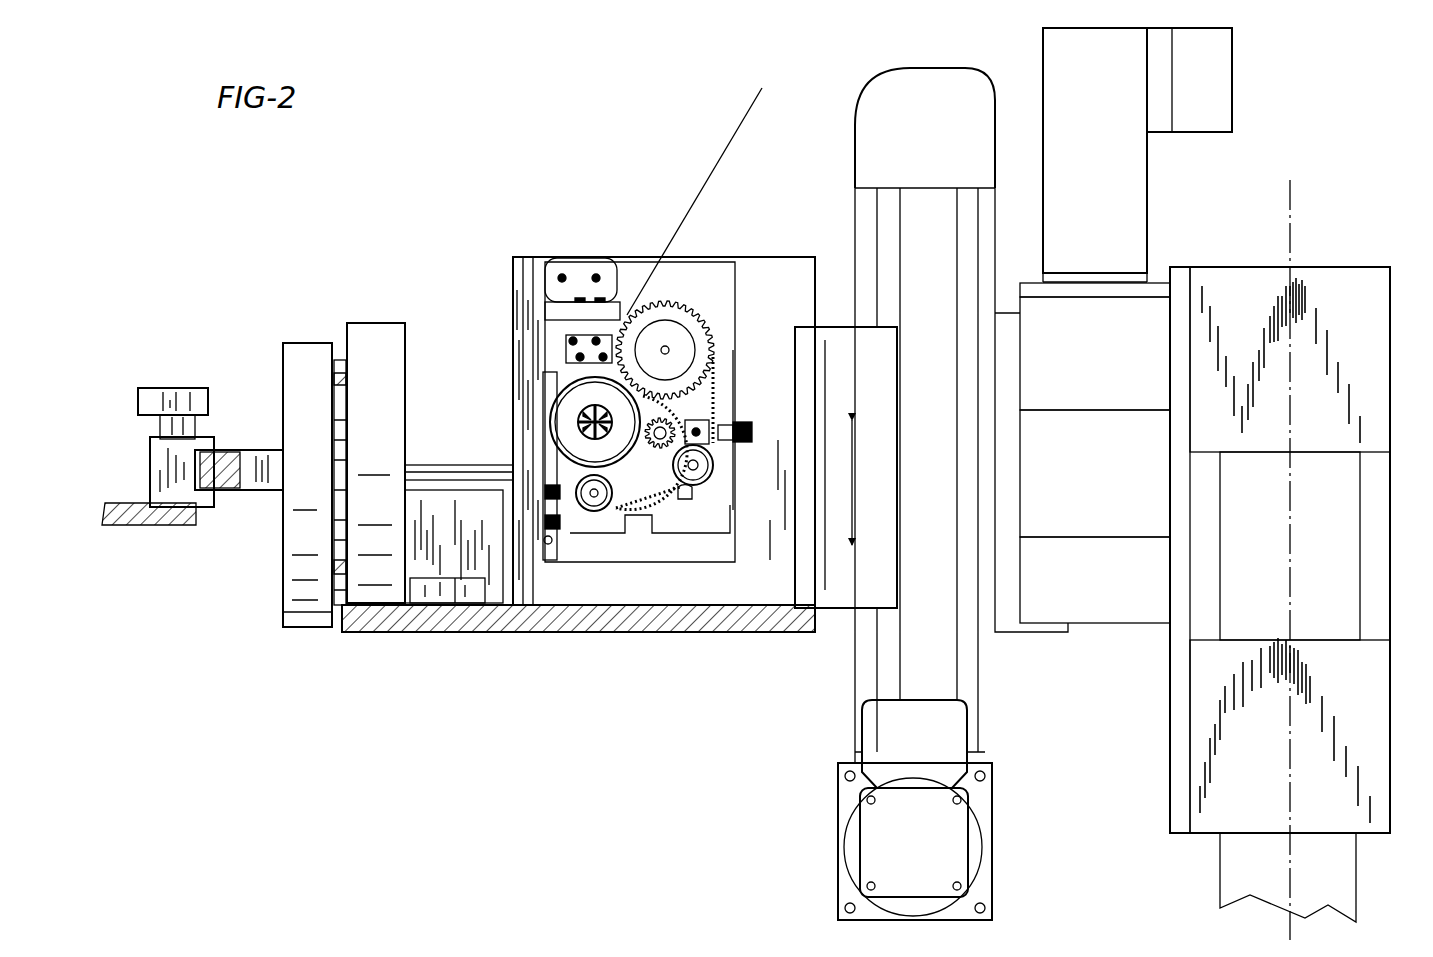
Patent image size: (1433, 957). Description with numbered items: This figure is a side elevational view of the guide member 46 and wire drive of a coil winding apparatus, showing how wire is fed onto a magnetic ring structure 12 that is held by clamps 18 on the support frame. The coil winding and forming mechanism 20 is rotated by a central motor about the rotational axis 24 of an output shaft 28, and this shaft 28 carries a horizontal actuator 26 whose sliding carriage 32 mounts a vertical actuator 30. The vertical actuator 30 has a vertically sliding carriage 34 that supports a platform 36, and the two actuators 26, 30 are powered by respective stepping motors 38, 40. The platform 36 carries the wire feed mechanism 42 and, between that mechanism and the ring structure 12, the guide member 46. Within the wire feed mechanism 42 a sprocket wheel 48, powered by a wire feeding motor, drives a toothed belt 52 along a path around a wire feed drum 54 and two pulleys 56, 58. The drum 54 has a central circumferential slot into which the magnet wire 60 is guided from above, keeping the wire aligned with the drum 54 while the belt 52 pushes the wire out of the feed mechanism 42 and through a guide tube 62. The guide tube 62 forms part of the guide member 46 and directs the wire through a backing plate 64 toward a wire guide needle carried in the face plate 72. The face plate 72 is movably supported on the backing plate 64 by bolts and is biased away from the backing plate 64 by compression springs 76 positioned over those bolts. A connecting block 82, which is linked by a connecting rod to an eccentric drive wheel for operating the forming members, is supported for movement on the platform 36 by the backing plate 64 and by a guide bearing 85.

The magnetic ring structure 12 is at (253, 448).
The clamps 18 is at (172, 387).
The coil winding and forming mechanism 20 is at (508, 245).
The rotational axis 24 is at (1290, 232).
The horizontal actuator 26 is at (1112, 612).
The output shaft 28 is at (1345, 516).
The vertical actuator 30 is at (854, 95).
The sliding carriage 32 is at (1010, 622).
The vertically sliding carriage 34 is at (842, 602).
The platform 36 is at (597, 632).
The stepping motor 38 is at (1230, 76).
The stepping motor 40 is at (880, 840).
The wire feed mechanism 42 is at (744, 252).
The guide member 46 is at (352, 312).
The sprocket wheel 48 is at (696, 340).
The toothed belt 52 is at (663, 496).
The wire feed drum 54 is at (574, 420).
The pulley 56 is at (700, 463).
The pulley 58 is at (594, 504).
The magnet wire 60 is at (700, 180).
The guide tube 62 is at (496, 465).
The backing plate 64 is at (405, 323).
The face plate 72 is at (283, 345).
The compression springs 76 is at (340, 374).
The connecting block 82 is at (496, 604).
The guide bearing 85 is at (447, 608).